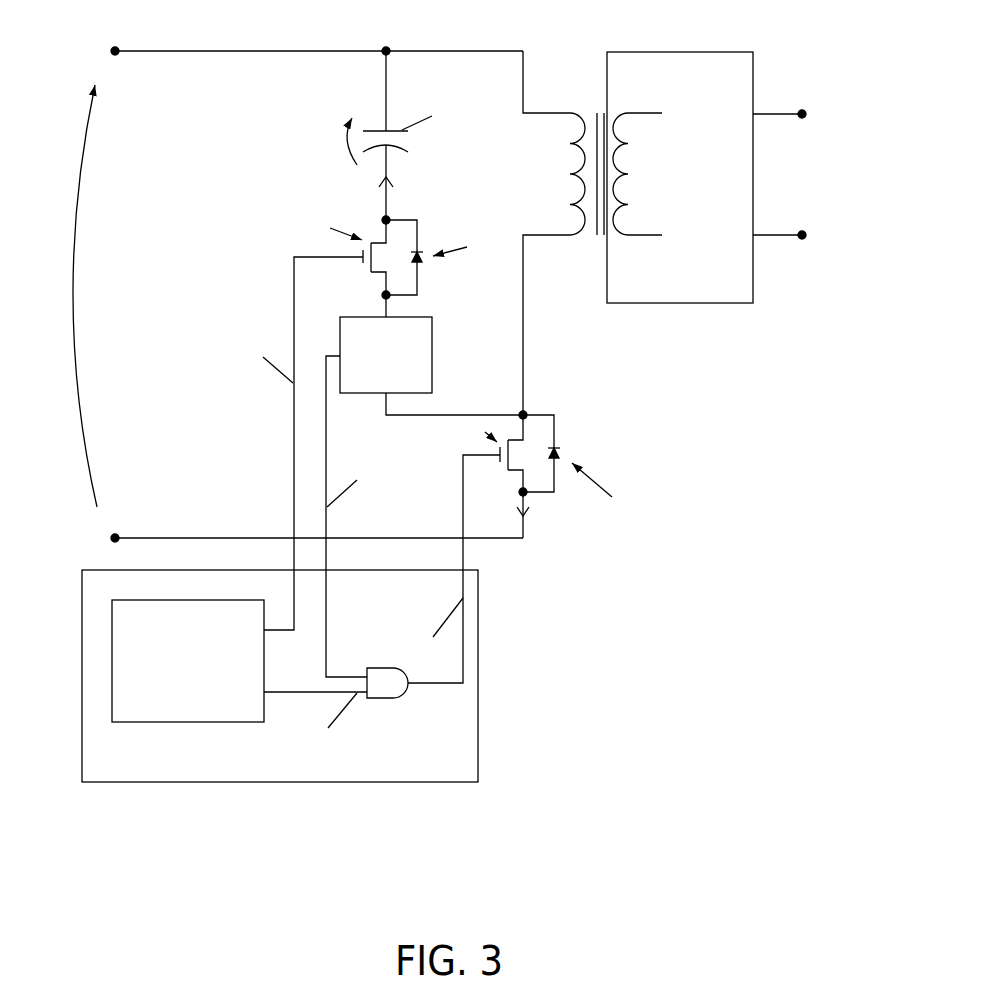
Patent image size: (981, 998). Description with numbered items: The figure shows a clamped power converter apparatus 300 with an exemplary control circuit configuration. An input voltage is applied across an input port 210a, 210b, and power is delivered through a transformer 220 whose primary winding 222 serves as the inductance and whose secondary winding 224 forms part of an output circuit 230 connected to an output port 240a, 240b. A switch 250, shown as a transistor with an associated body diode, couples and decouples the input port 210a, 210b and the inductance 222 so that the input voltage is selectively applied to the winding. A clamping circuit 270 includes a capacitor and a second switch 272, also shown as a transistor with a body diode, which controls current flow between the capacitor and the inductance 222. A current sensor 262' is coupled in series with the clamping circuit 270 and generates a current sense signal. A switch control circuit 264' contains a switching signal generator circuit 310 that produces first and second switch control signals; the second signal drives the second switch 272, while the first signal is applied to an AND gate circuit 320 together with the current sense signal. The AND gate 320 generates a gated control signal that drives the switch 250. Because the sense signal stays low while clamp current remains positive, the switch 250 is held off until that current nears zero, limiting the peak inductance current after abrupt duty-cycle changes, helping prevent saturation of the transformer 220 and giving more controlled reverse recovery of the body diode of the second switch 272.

The input port terminal 210a is at (113, 47).
The input port terminal 210b is at (110, 542).
The transformer 220 is at (568, 97).
The primary winding 222 is at (572, 173).
The secondary winding 224 is at (628, 175).
The output circuit 230 is at (683, 52).
The output port terminal 240a is at (806, 110).
The output port terminal 240b is at (806, 232).
The switch 250 is at (587, 430).
The current sensor 262' is at (425, 344).
The switch control circuit 264' is at (280, 696).
The clamping circuit 270 is at (255, 143).
The second switch 272 is at (332, 210).
The power converter apparatus 300 is at (738, 653).
The switching signal generator circuit 310 is at (190, 722).
The AND gate circuit 320 is at (385, 700).